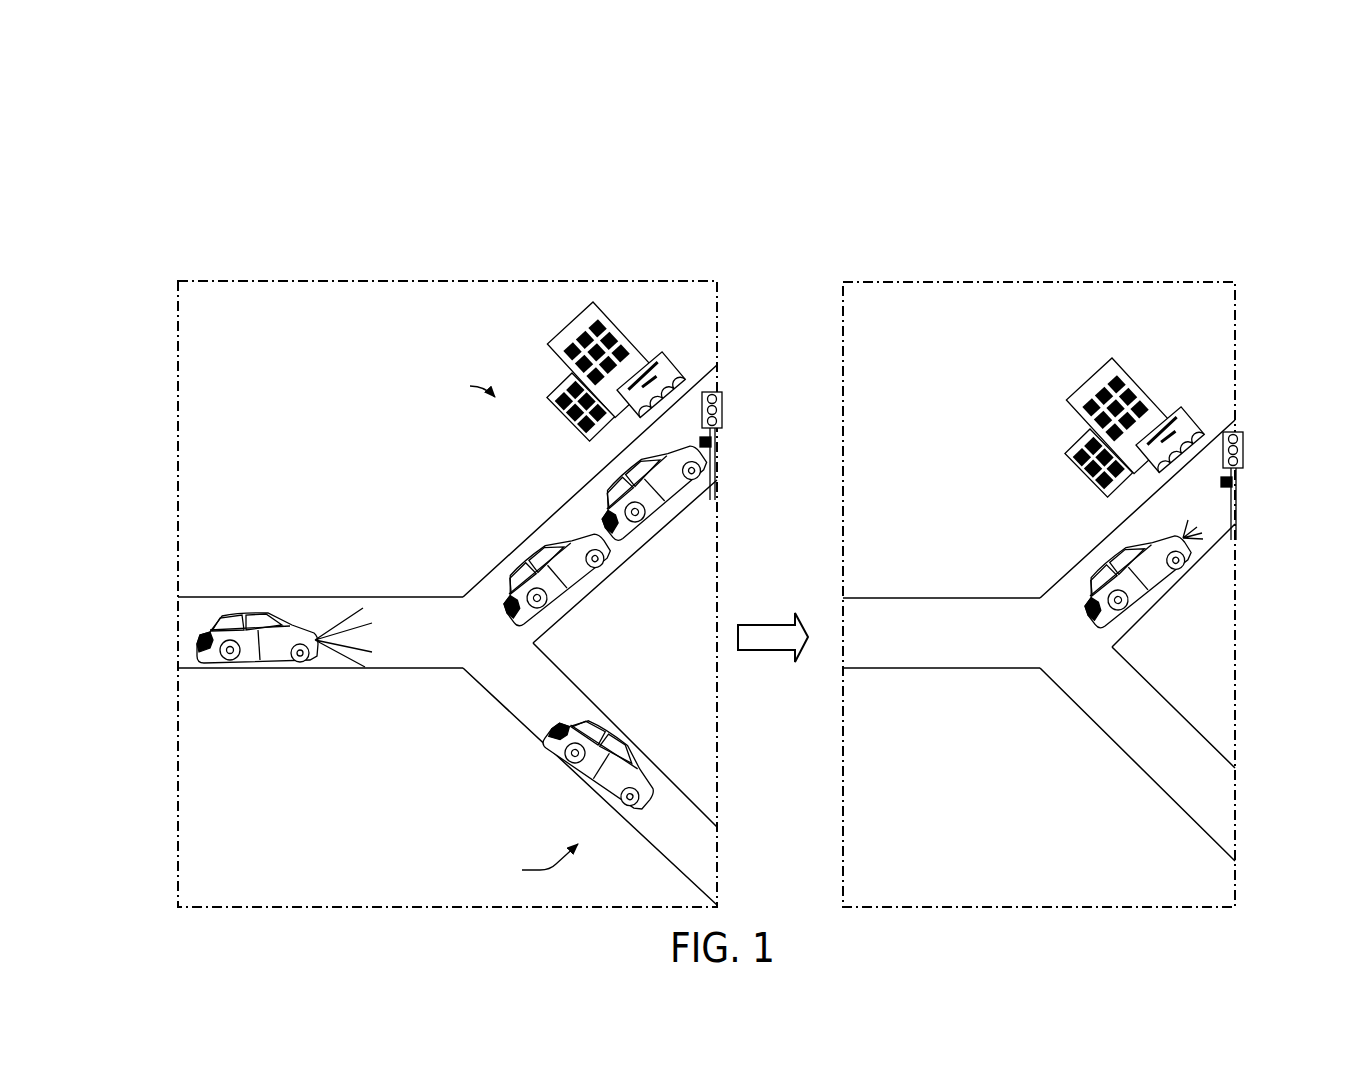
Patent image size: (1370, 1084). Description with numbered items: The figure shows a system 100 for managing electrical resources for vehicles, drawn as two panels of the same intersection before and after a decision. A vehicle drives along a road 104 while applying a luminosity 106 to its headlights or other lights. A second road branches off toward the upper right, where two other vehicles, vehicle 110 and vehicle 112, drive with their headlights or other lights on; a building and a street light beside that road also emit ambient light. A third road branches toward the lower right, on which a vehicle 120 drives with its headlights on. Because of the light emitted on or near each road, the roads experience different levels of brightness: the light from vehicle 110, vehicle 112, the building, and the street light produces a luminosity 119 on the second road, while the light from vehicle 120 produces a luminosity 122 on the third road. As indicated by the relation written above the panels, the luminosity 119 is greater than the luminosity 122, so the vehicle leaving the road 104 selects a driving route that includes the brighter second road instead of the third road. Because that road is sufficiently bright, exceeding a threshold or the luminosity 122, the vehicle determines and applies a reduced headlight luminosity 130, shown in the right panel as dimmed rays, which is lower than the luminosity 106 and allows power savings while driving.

The system 100 is at (1228, 57).
The road 104 is at (420, 653).
The luminosity 106 is at (378, 623).
The vehicle 110 is at (543, 552).
The vehicle 112 is at (595, 512).
The luminosity 119 is at (420, 389).
The vehicle 120 is at (603, 727).
The luminosity 122 is at (490, 862).
The luminosity 130 is at (1200, 549).